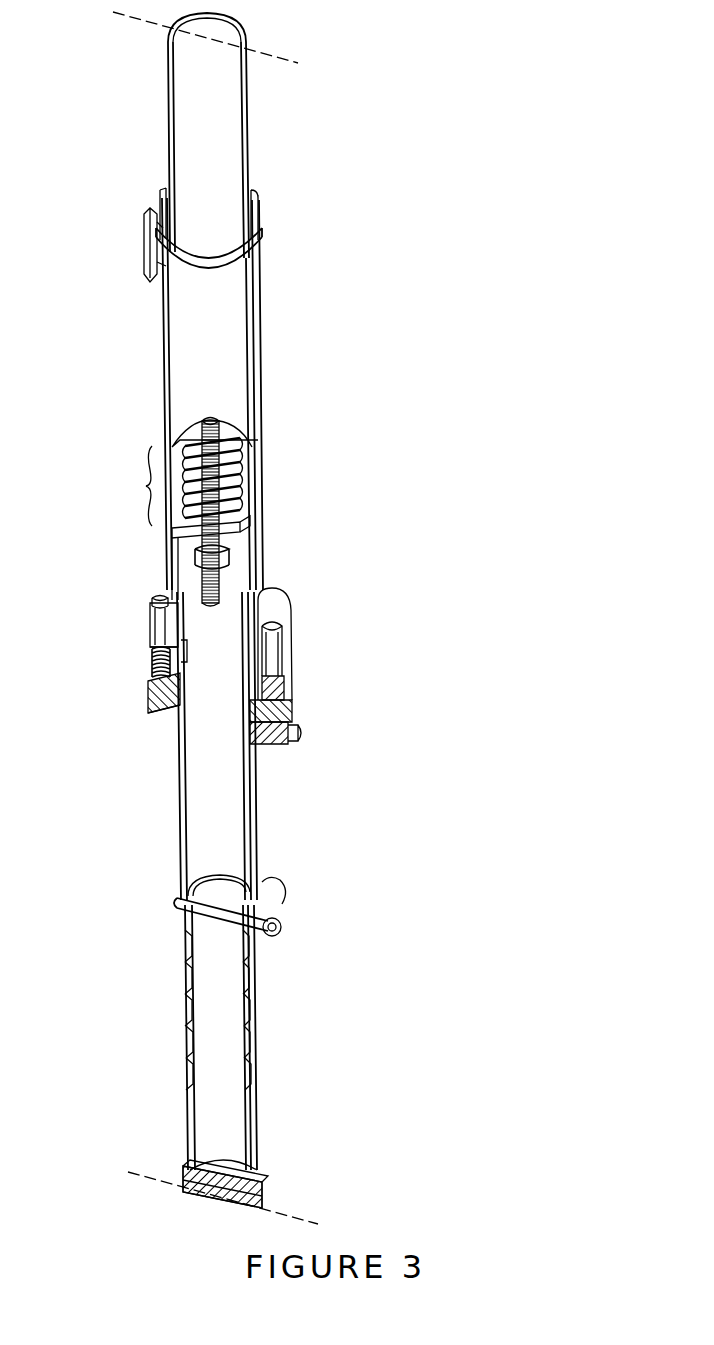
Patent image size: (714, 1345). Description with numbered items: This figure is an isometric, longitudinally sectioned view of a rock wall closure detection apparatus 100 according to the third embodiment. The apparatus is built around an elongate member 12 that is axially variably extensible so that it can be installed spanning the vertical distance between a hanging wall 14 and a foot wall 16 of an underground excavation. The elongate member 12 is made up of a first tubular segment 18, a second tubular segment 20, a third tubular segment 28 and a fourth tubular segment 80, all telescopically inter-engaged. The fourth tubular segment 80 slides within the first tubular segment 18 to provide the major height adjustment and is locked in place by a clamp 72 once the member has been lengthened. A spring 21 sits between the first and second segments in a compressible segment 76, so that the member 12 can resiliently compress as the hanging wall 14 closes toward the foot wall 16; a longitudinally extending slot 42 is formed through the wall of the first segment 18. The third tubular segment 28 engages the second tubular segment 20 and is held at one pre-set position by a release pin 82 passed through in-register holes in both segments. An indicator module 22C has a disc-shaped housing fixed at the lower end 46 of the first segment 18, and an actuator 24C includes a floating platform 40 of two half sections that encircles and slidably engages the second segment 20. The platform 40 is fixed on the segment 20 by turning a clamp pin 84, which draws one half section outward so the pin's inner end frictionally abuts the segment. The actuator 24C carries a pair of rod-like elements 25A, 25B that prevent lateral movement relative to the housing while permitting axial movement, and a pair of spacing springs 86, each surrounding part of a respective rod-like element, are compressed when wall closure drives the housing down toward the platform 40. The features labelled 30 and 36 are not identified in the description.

The telescoping pole assembly 100 is at (386, 340).
The elongate member 12 is at (290, 802).
The hanging wall 14 is at (146, 36).
The foot wall 16 is at (292, 1200).
The first tubular segment 18 is at (165, 372).
The second tubular segment 20 is at (180, 822).
The spring 21 is at (240, 492).
The indicator module 22C is at (300, 610).
The actuator 24C is at (142, 702).
The rod-like element 25A is at (152, 624).
The rod-like element 25B is at (280, 652).
The third tubular segment 28 is at (258, 1006).
The tube end 30 is at (264, 1170).
The nut 36 is at (238, 568).
The floating platform 40 is at (162, 692).
The longitudinally extending slot 42 is at (192, 1184).
The lower end of the first segment 46 is at (186, 648).
The clamp 72 is at (146, 240).
The compressible segment 76 is at (136, 486).
The fourth tubular segment 80 is at (248, 114).
The release pin 82 is at (286, 918).
The clamp pin 84 is at (304, 732).
The spacing springs 86 is at (152, 660).